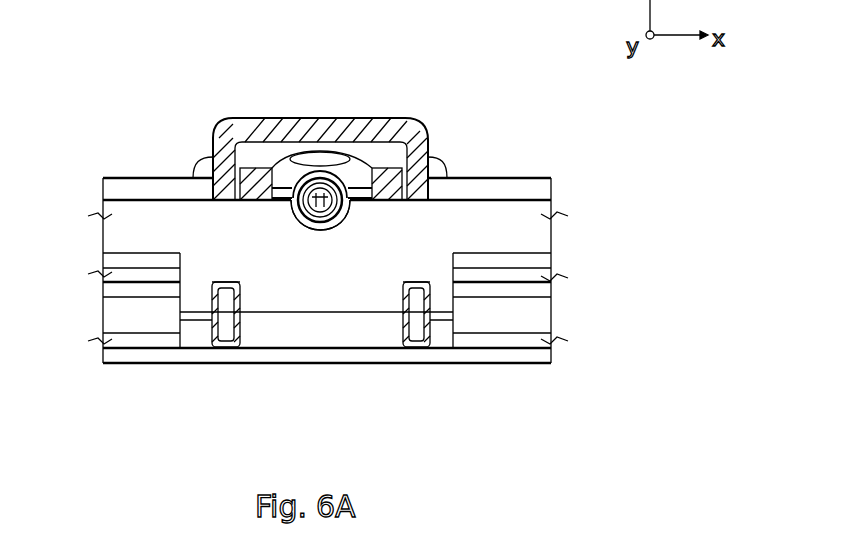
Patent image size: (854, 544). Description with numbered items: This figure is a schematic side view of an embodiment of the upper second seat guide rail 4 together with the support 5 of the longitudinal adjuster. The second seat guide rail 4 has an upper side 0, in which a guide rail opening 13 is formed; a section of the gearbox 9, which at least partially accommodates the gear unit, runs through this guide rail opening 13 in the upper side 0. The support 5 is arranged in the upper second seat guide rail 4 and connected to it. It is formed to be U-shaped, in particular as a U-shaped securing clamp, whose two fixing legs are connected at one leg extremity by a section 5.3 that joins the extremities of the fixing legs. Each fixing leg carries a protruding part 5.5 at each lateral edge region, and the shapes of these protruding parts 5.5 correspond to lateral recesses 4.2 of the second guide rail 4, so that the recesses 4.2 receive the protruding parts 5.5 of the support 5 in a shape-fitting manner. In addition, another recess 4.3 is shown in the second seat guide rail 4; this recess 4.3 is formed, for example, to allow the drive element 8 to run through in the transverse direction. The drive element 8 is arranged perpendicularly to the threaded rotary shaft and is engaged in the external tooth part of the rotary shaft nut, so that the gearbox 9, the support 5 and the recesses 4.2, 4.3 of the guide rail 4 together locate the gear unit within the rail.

The upper side 0 is at (124, 177).
The second seat guide rail 4 is at (537, 190).
The lateral recess 4.2 is at (220, 349).
The recess 4.3 is at (346, 230).
The support 5 is at (422, 124).
The connecting section 5.3 is at (320, 117).
The protruding part 5.5 is at (232, 348).
The drive element 8 is at (294, 188).
The gearbox 9 is at (368, 164).
The guide rail opening 13 is at (446, 173).